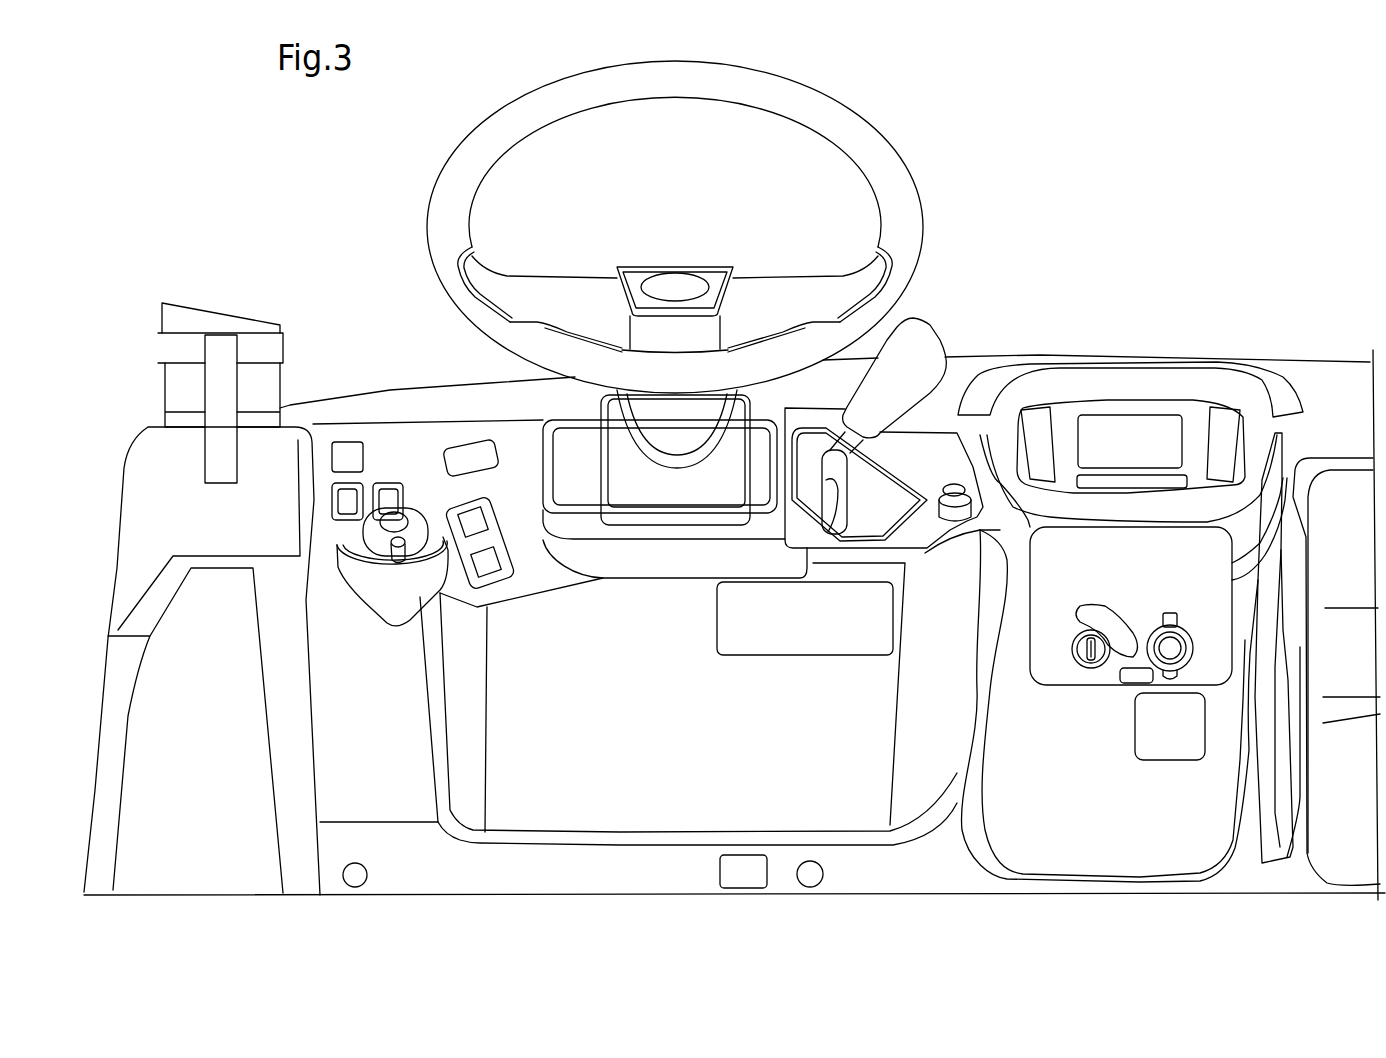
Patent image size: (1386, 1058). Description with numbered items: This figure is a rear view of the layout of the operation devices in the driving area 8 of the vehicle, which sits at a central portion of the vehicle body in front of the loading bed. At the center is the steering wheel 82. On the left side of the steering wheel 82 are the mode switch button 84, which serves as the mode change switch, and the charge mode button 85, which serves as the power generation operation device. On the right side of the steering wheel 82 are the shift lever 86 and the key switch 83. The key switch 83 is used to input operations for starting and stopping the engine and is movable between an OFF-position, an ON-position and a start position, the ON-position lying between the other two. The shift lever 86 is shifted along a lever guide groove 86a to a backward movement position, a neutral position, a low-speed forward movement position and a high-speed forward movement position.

The driving area 8 is at (1237, 167).
The steering wheel 82 is at (907, 177).
The key switch 83 is at (1083, 653).
The mode switch button 84 is at (481, 511).
The charge mode button 85 is at (493, 570).
The shift lever 86 is at (937, 337).
The lever guide groove 86a is at (836, 485).